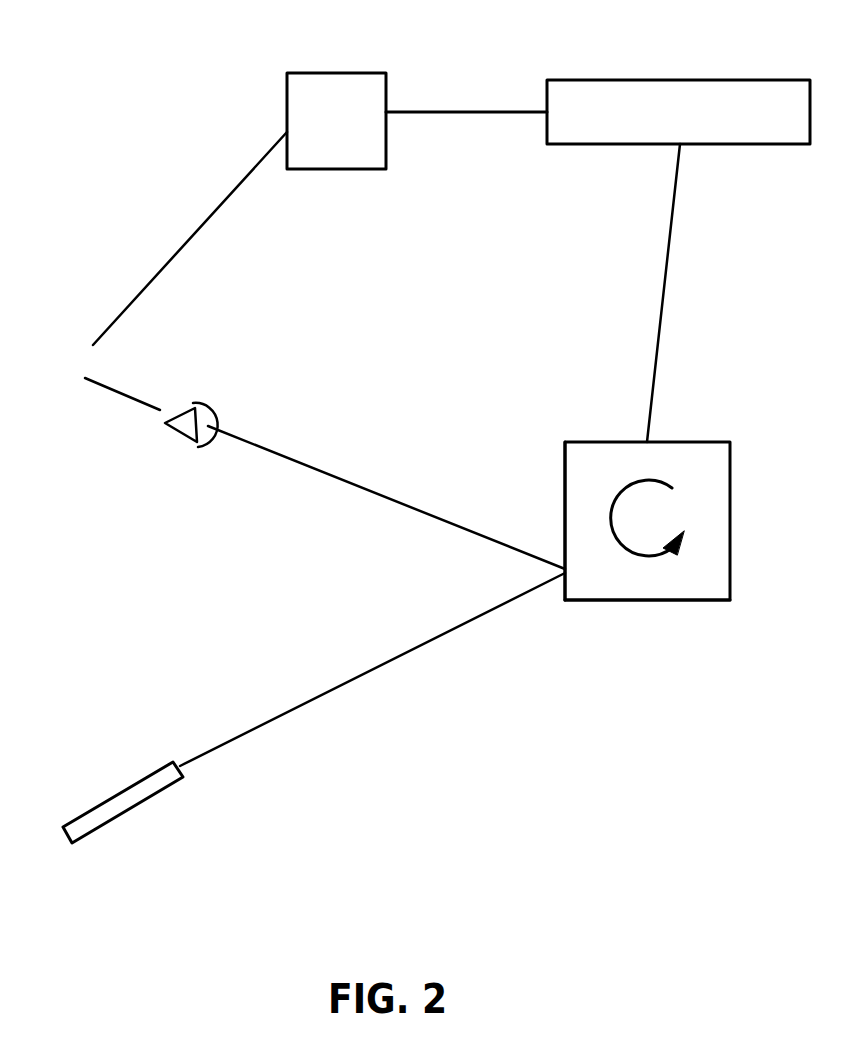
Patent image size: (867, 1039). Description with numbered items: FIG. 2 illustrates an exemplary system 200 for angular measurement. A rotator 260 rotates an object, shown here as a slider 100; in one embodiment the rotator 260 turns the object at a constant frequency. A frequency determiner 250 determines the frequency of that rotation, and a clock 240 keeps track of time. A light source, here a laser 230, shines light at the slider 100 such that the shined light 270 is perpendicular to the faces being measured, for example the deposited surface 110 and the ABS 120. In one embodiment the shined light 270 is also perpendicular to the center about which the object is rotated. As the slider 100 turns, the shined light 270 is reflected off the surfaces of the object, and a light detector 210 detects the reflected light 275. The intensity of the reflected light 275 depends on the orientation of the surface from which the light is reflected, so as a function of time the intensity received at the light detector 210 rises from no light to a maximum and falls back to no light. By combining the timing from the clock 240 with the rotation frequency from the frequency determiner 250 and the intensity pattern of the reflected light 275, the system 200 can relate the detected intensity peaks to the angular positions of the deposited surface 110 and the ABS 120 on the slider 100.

The system for angular measurement 200 is at (162, 36).
The clock 240 is at (357, 145).
The frequency determiner 250 is at (698, 138).
The light detector 210 is at (153, 289).
The reflected light 275 is at (318, 470).
The shined light 270 is at (283, 710).
The laser 230 is at (142, 813).
The slider 100 is at (662, 600).
The ABS 120 is at (565, 518).
The deposited surface 110 is at (593, 600).
The rotator 260 is at (672, 488).